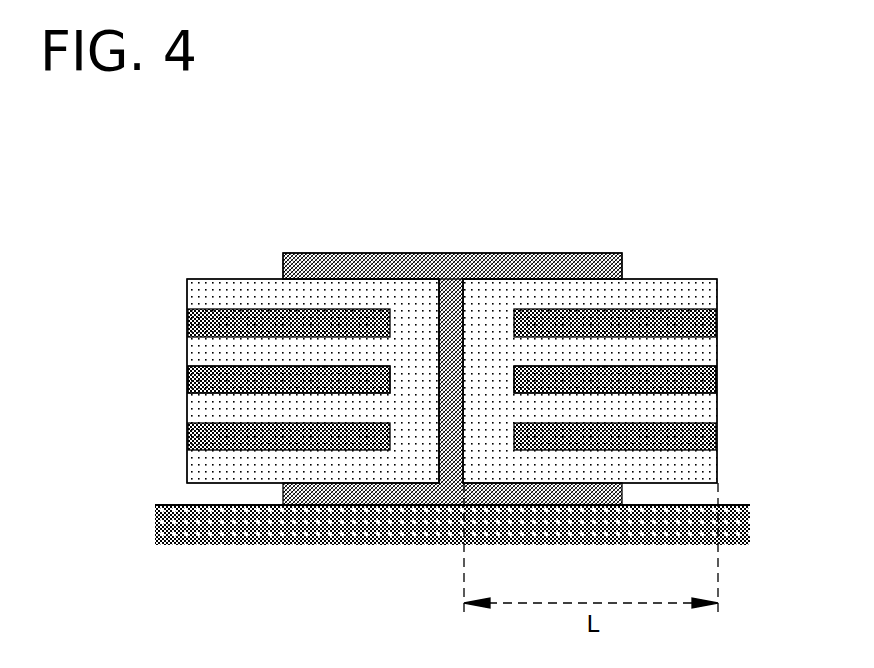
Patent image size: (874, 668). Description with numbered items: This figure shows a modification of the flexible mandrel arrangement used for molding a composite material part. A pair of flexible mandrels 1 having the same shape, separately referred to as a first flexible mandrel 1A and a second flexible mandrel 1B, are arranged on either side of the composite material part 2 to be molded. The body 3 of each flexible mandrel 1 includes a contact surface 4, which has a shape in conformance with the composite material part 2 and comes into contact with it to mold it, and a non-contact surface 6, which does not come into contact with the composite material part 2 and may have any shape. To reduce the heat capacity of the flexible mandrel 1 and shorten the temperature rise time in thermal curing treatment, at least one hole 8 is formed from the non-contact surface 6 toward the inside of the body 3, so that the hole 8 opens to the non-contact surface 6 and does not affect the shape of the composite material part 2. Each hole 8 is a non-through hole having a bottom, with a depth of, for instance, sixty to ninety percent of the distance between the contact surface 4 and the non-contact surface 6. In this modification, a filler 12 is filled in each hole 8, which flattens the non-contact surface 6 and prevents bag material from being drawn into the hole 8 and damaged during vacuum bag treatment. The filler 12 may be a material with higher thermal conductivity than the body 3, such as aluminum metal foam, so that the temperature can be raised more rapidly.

The flexible mandrel 1 is at (453, 291).
The first flexible mandrel 1A is at (685, 278).
The second flexible mandrel 1B is at (210, 278).
The composite material part 2 is at (558, 253).
The body 3 is at (215, 483).
The contact surface 4 is at (368, 278).
The non-contact surface 6 is at (187, 290).
The hole 8 is at (452, 379).
The filler 12 is at (205, 380).